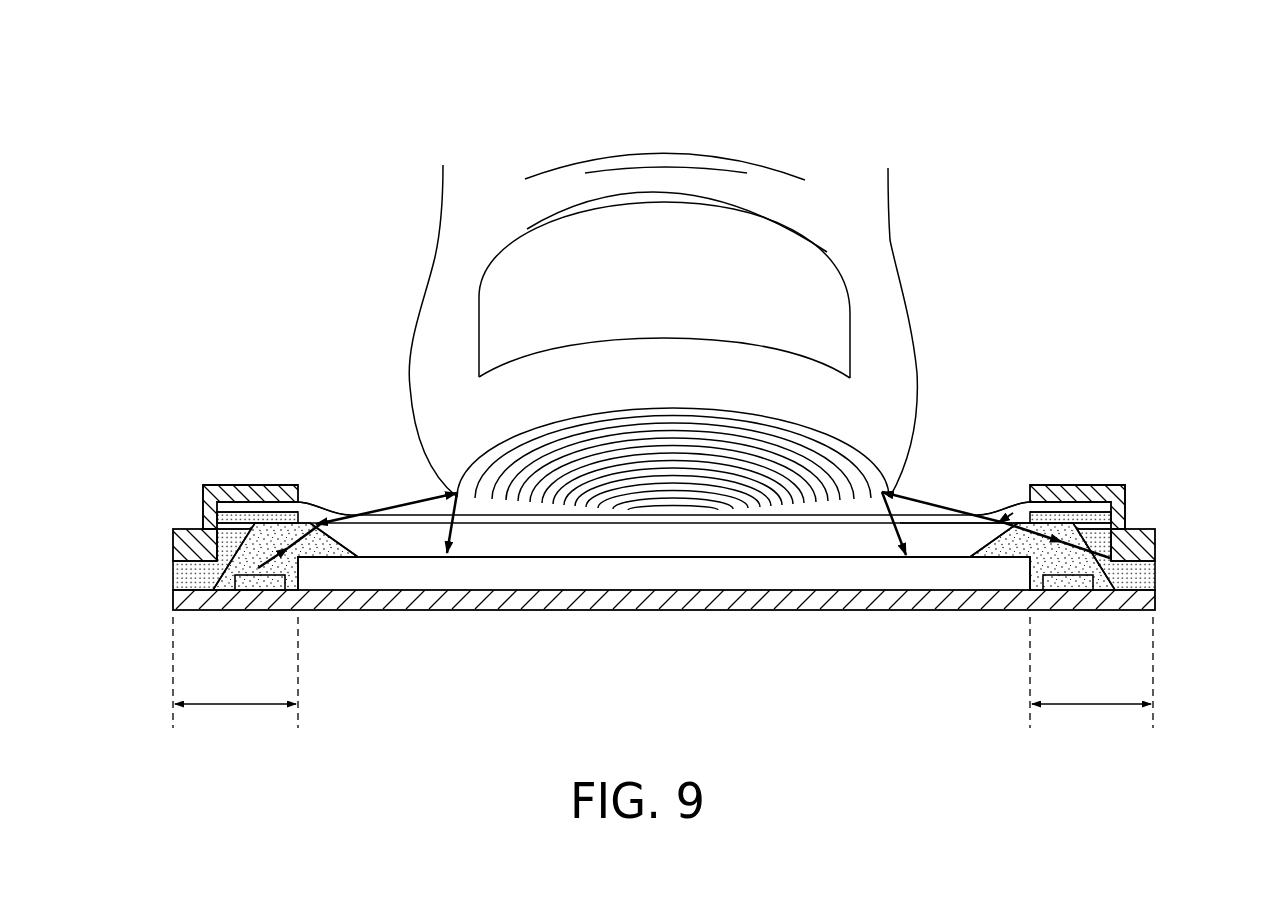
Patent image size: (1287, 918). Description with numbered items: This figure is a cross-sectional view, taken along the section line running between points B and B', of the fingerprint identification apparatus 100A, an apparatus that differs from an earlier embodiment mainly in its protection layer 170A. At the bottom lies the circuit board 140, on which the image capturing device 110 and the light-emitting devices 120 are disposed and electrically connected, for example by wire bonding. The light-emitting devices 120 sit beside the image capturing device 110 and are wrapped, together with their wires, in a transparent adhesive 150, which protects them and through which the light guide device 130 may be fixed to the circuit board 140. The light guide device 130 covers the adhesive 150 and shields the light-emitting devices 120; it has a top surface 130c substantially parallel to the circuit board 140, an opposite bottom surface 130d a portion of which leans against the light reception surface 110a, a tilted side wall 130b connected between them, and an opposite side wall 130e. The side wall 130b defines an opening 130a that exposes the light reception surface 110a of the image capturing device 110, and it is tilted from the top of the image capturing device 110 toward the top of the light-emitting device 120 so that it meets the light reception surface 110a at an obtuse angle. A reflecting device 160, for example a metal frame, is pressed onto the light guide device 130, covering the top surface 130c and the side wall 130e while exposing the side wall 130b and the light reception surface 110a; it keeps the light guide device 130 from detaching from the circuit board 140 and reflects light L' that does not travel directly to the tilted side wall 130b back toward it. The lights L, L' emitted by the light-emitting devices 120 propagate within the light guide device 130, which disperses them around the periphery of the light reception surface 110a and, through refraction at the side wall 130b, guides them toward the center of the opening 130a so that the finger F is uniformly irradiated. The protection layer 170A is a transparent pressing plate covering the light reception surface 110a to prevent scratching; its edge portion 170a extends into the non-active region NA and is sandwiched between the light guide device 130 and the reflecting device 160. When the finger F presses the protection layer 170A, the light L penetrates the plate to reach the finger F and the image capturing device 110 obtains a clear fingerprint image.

The fingerprint identification apparatus 100A is at (662, 592).
The image capturing device 110 is at (819, 570).
The light reception surface 110a is at (858, 552).
The light-emitting device 120 is at (260, 580).
The light guide device 130 is at (183, 575).
The opening 130a is at (940, 527).
The side wall 130b is at (240, 512).
The top surface 130c is at (205, 520).
The bottom surface 130d is at (330, 560).
The side wall 130e is at (202, 486).
The circuit board 140 is at (1150, 600).
The adhesive 150 is at (230, 588).
The reflecting device 160 is at (183, 540).
The protection layer 170A is at (338, 512).
The edge portion 170a is at (215, 523).
The finger F is at (870, 242).
The light L is at (357, 501).
The light L' is at (996, 491).
The non-active region NA is at (663, 679).
The section line end point B is at (165, 395).
The section line end point B' is at (1175, 395).